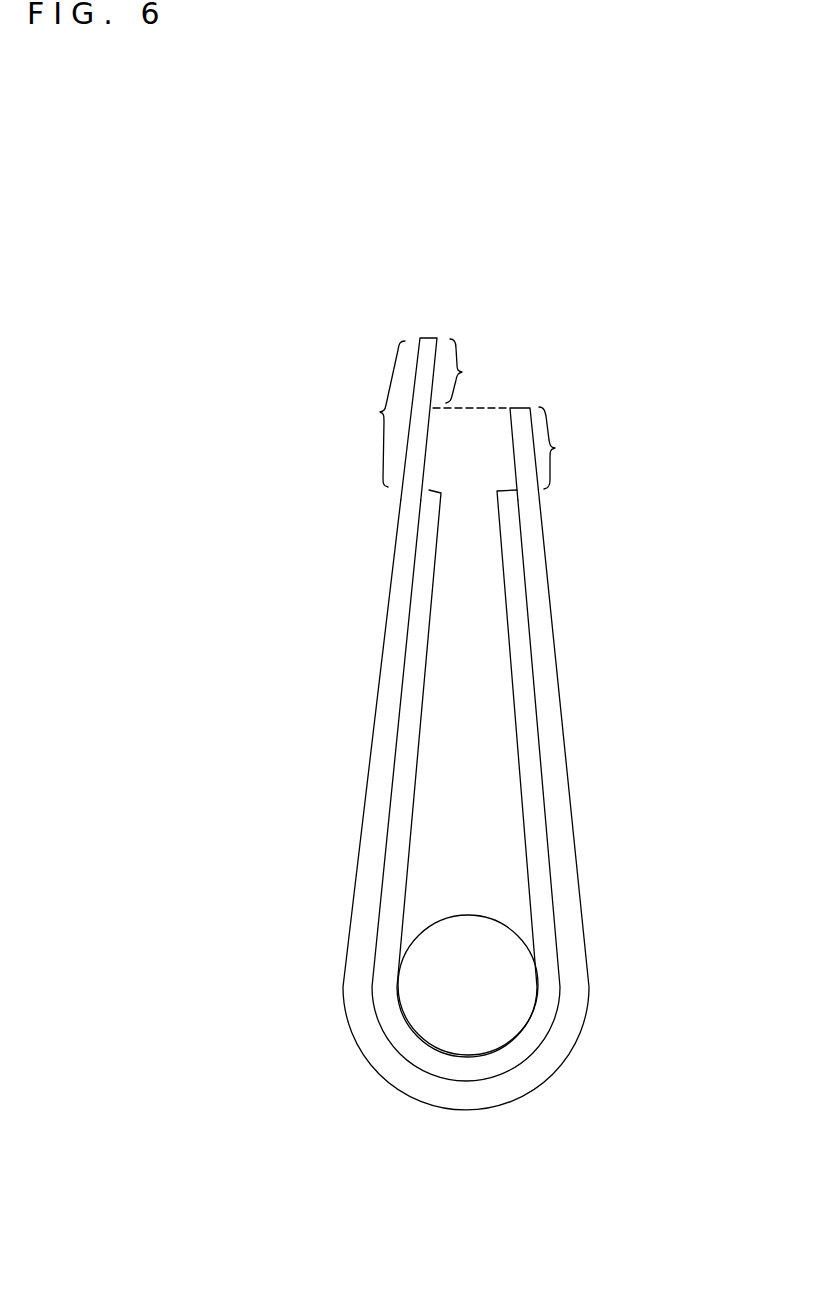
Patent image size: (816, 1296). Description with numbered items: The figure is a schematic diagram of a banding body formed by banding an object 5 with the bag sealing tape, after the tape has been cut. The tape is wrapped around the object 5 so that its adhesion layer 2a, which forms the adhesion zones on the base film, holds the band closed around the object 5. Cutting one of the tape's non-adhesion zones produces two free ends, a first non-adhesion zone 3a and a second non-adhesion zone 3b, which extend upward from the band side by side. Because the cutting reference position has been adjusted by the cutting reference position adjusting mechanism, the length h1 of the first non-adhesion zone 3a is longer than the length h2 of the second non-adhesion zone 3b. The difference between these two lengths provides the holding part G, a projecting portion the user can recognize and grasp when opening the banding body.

The adhesion layer 2a is at (542, 880).
The first non-adhesion zone 3a is at (427, 348).
The second non-adhesion zone 3b is at (517, 425).
The object 5 is at (470, 1012).
The holding part G is at (467, 371).
The length of first non-adhesion zone h1 is at (369, 414).
The length of second non-adhesion zone h2 is at (569, 448).